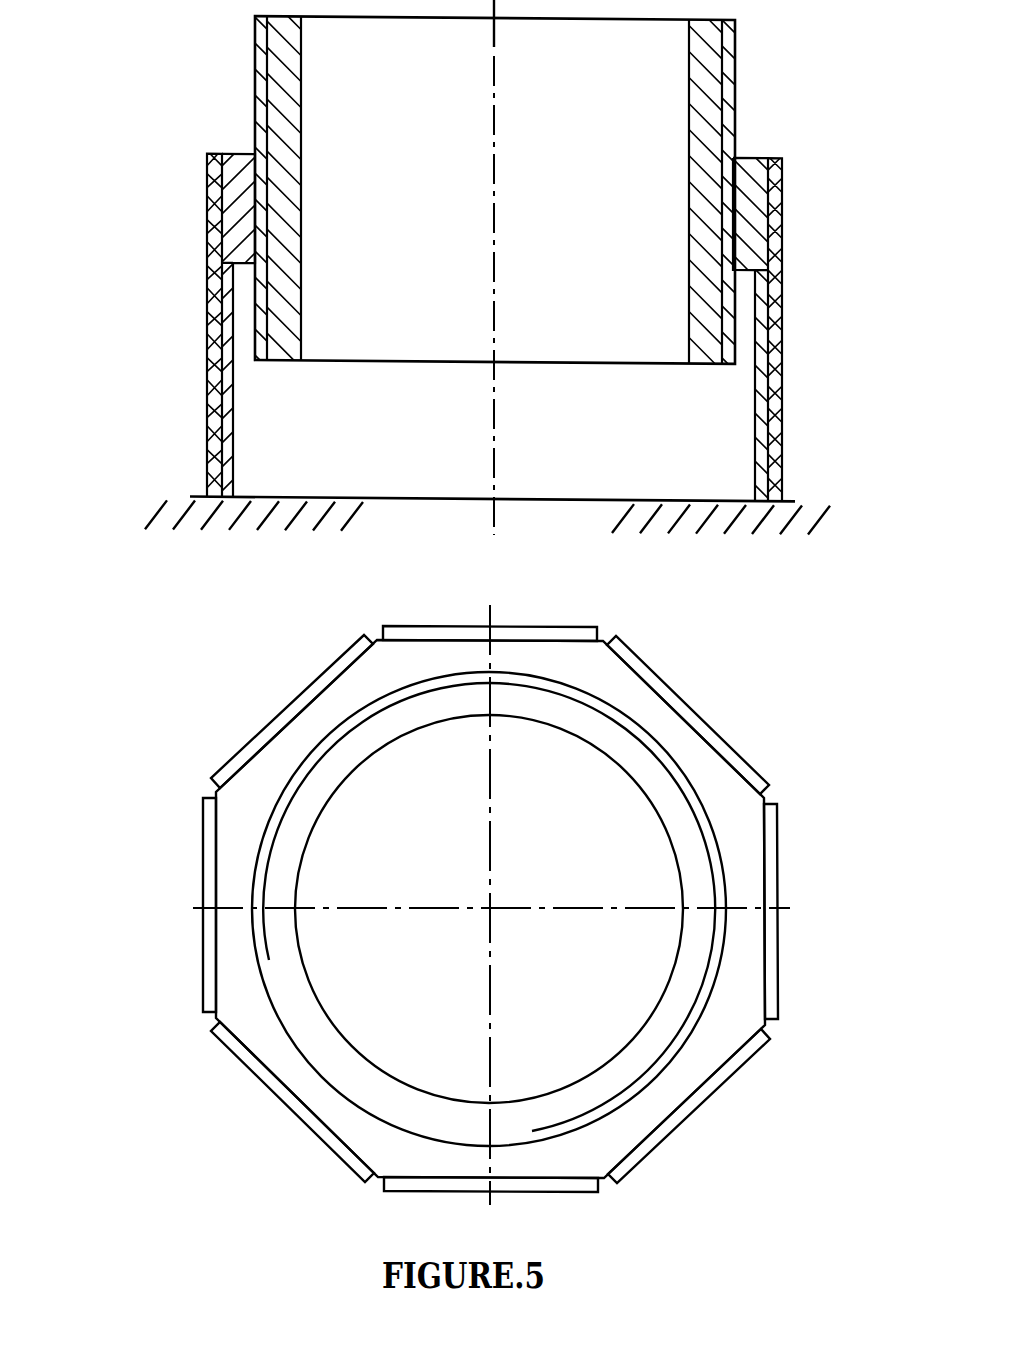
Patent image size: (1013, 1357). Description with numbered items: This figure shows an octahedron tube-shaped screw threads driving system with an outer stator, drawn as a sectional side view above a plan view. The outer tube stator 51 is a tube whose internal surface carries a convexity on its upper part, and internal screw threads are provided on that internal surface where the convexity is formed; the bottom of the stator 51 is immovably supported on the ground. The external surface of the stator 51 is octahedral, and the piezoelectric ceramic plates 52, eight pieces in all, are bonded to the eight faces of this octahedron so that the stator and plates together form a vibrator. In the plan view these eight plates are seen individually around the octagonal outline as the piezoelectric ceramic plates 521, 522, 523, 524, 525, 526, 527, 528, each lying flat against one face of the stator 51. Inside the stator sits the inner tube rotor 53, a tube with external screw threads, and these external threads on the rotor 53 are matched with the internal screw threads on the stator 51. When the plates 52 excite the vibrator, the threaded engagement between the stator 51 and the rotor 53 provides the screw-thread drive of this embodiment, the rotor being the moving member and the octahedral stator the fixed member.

The outer tube stator 51 is at (205, 235).
The piezoelectric ceramic plates 52 is at (207, 185).
The inner tube rotor 53 is at (283, 78).
The piezoelectric ceramic plate 521 is at (208, 870).
The piezoelectric ceramic plate 522 is at (285, 713).
The piezoelectric ceramic plate 523 is at (508, 632).
The piezoelectric ceramic plate 524 is at (680, 700).
The piezoelectric ceramic plate 525 is at (770, 860).
The piezoelectric ceramic plate 526 is at (742, 1058).
The piezoelectric ceramic plate 527 is at (522, 1187).
The piezoelectric ceramic plate 528 is at (283, 1095).